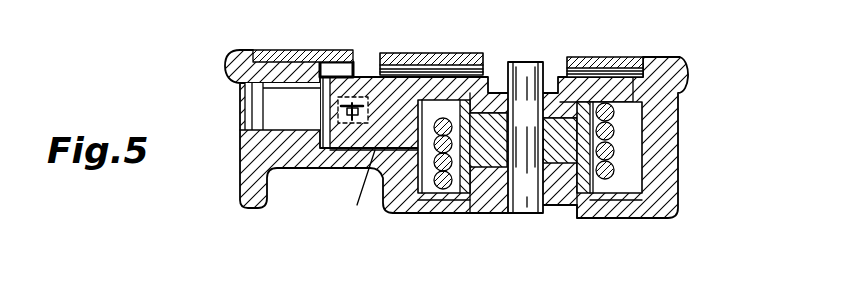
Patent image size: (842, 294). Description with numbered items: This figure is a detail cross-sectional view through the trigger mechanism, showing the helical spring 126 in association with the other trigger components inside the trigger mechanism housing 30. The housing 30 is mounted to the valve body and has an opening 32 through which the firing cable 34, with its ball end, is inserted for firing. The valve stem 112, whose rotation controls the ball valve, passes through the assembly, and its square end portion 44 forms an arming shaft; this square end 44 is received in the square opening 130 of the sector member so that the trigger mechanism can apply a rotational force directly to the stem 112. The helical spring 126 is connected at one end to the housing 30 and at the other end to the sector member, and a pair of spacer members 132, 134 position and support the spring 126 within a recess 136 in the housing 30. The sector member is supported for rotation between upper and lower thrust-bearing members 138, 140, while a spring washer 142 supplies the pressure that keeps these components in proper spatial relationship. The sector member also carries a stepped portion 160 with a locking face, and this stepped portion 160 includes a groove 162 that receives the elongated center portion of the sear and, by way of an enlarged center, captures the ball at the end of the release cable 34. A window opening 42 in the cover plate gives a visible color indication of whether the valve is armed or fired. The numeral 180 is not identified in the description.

The trigger mechanism housing 30 is at (657, 164).
The opening 32 is at (247, 86).
The firing cable 34 is at (356, 123).
The opening 42 is at (362, 56).
The end portion of valve stem 44 is at (519, 68).
The valve stem 112 is at (528, 70).
The helical spring 126 is at (613, 112).
The square opening 130 is at (565, 92).
The spacer member 132 is at (568, 205).
The spacer member 134 is at (490, 158).
The recess 136 is at (623, 177).
The upper thrust-bearing member 138 is at (430, 70).
The lower thrust-bearing member 140 is at (368, 197).
The spring washer 142 is at (632, 197).
The stepped portion 160 is at (338, 148).
The groove 162 is at (335, 110).
The element 180 is at (456, 20).